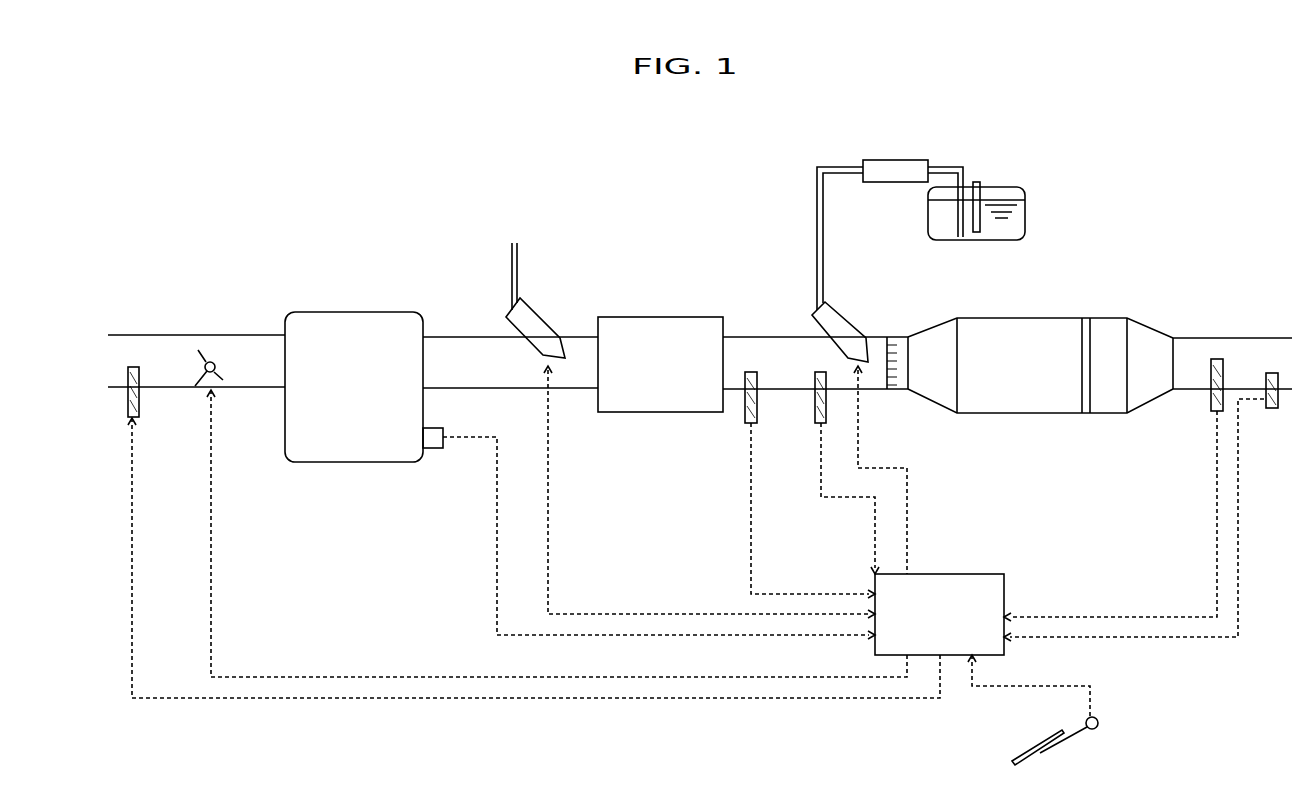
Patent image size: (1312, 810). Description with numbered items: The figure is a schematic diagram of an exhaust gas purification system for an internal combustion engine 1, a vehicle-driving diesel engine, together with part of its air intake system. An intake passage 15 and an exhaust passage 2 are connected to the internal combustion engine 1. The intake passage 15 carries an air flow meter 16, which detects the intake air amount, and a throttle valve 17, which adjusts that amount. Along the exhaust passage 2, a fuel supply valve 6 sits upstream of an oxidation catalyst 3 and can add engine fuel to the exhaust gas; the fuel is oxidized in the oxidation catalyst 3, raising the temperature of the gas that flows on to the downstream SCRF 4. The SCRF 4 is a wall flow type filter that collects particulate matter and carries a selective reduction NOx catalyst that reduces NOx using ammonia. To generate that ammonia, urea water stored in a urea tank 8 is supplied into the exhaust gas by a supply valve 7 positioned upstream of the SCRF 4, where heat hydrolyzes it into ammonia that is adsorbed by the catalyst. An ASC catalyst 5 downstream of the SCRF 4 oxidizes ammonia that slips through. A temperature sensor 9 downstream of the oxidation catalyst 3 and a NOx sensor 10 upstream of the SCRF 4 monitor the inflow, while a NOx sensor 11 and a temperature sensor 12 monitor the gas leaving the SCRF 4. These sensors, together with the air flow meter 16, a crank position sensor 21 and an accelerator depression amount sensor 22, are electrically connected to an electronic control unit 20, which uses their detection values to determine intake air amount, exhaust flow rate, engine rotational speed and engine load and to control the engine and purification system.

The internal combustion engine 1 is at (383, 312).
The exhaust passage 2 is at (772, 337).
The oxidation catalyst 3 is at (643, 405).
The SCRF 4 is at (1018, 413).
The ASC catalyst 5 is at (1108, 413).
The fuel supply valve 6 is at (545, 320).
The supply valve 7 is at (850, 317).
The urea tank 8 is at (1027, 203).
The temperature sensor 9 is at (745, 415).
The NOx sensor 10 is at (815, 415).
The NOx sensor 11 is at (1212, 411).
The temperature sensor 12 is at (1270, 410).
The intake passage 15 is at (168, 335).
The air flow meter 16 is at (128, 408).
The throttle valve 17 is at (205, 387).
The electronic control unit 20 is at (978, 573).
The crank position sensor 21 is at (432, 448).
The accelerator depression amount sensor 22 is at (1096, 730).